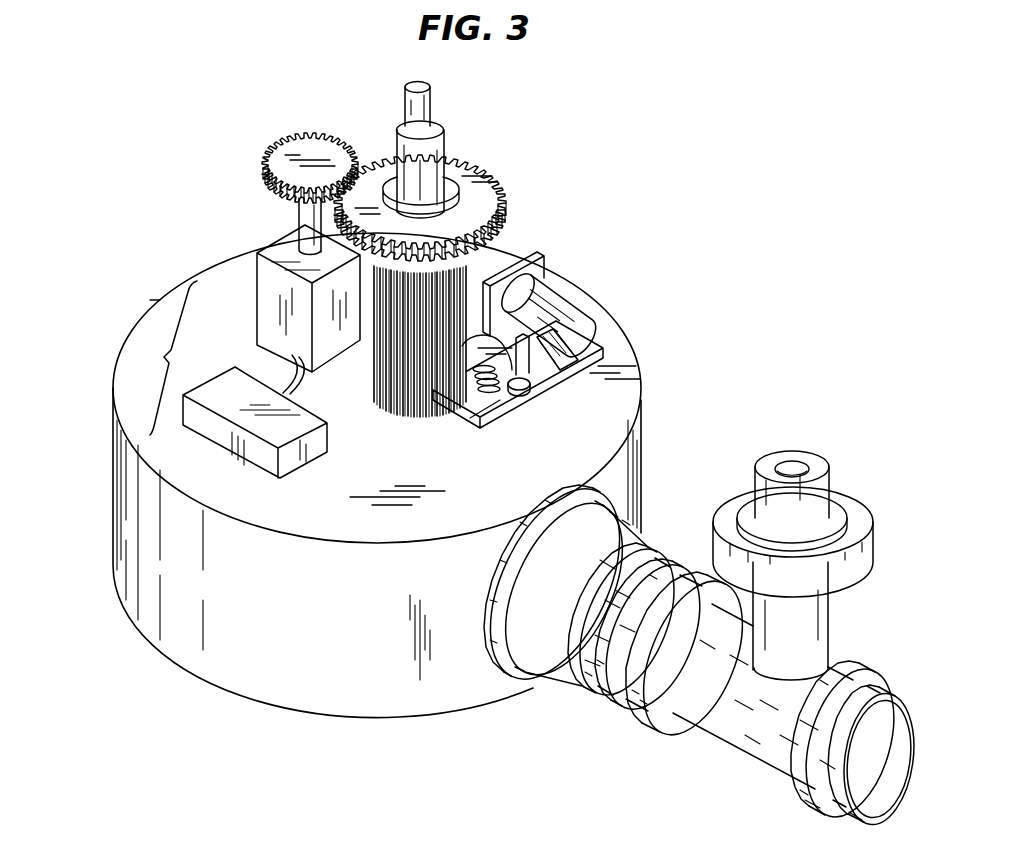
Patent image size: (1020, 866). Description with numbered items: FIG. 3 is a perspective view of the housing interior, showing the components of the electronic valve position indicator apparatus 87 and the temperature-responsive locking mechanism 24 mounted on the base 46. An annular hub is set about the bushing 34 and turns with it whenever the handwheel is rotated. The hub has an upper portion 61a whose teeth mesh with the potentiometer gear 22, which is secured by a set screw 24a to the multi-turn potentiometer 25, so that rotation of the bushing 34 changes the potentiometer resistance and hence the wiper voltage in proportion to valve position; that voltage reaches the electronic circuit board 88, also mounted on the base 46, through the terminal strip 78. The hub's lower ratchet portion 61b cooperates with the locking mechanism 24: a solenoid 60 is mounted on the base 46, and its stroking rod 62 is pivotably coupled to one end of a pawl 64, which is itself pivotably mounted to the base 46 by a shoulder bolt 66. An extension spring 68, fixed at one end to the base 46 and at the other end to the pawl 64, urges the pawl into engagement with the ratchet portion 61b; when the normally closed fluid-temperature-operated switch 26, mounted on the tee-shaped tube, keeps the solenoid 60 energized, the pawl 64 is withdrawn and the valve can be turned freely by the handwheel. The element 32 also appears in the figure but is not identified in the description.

The potentiometer gear 22 is at (272, 158).
The temperature-responsive locking mechanism 24 is at (610, 325).
The set screw 24a is at (307, 216).
The multi-turn potentiometer 25 is at (257, 318).
The fluid-temperature-operated switch 26 is at (860, 526).
The output shaft 32 is at (420, 108).
The bushing 34 is at (443, 162).
The base 46 is at (113, 500).
The solenoid 60 is at (547, 298).
The upper portion 61a is at (388, 157).
The lower ratchet portion 61b is at (385, 397).
The stroking rod 62 is at (553, 358).
The pawl 64 is at (480, 428).
The shoulder bolt 66 is at (522, 391).
The extension spring 68 is at (485, 402).
The terminal strip 78 is at (302, 377).
The electronic valve position indicator apparatus 87 is at (166, 358).
The electronic circuit board 88 is at (222, 383).